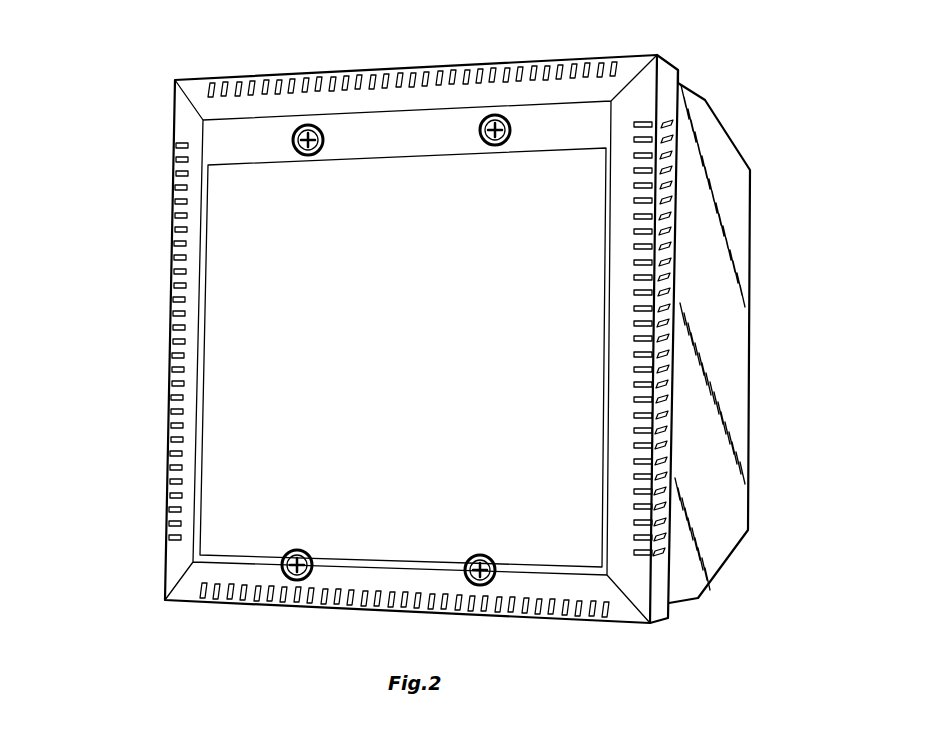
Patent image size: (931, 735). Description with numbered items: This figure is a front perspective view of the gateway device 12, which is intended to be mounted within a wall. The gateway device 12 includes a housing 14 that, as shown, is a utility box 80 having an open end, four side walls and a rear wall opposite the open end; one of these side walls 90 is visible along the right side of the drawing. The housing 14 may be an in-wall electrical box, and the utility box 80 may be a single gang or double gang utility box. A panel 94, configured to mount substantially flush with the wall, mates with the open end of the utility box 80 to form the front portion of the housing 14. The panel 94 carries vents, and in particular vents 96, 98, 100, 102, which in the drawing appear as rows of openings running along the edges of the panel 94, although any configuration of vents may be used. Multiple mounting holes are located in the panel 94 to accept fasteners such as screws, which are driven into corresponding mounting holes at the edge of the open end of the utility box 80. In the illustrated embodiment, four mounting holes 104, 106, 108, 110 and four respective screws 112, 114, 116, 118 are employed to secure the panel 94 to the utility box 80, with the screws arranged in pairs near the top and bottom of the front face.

The gateway device 12 is at (757, 130).
The housing 14 is at (167, 248).
The utility box 80 is at (755, 237).
The side wall 90 is at (745, 380).
The panel 94 is at (668, 90).
The vent 96 is at (668, 460).
The vent 98 is at (263, 603).
The vent 100 is at (170, 455).
The vent 102 is at (233, 88).
The mounting hole 104 is at (512, 130).
The mounting hole 106 is at (497, 568).
The mounting hole 108 is at (313, 562).
The mounting hole 110 is at (325, 140).
The screw 112 is at (479, 130).
The screw 114 is at (465, 566).
The screw 116 is at (282, 560).
The screw 118 is at (293, 142).